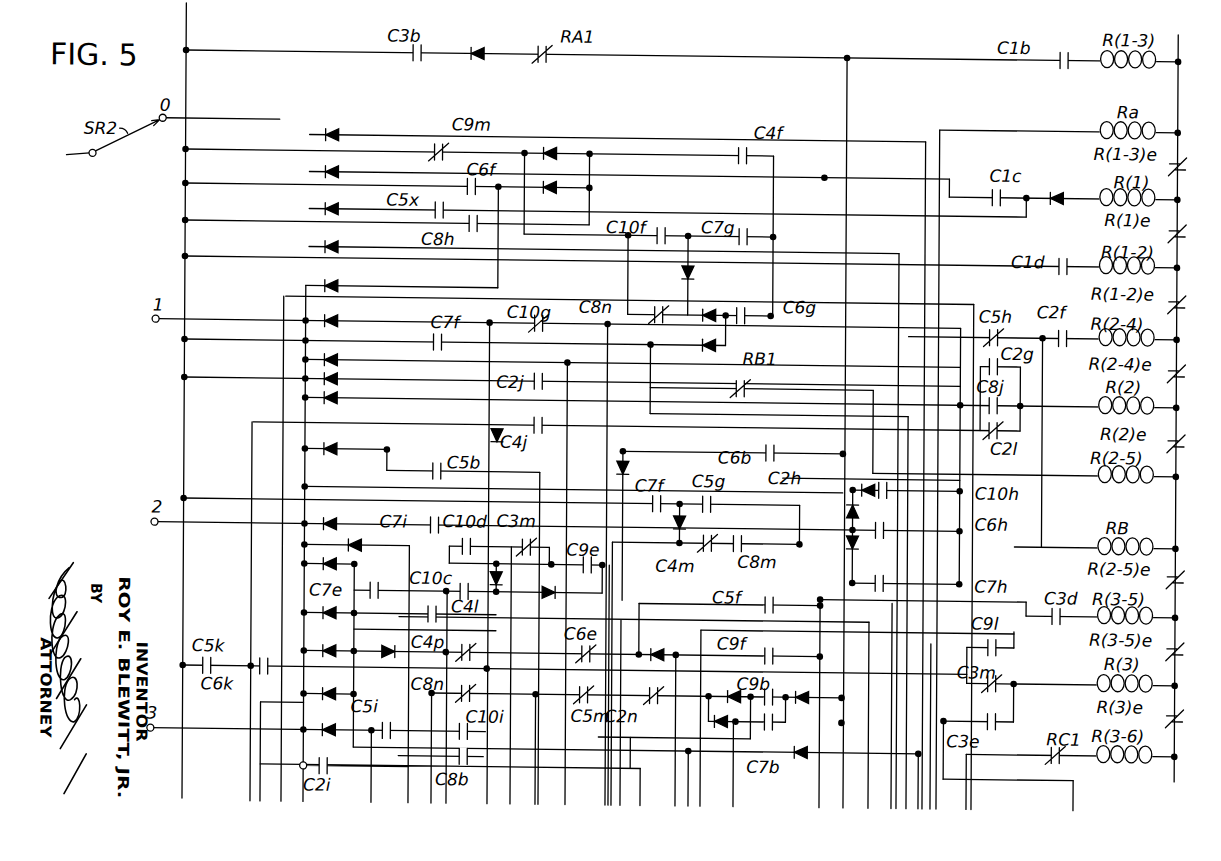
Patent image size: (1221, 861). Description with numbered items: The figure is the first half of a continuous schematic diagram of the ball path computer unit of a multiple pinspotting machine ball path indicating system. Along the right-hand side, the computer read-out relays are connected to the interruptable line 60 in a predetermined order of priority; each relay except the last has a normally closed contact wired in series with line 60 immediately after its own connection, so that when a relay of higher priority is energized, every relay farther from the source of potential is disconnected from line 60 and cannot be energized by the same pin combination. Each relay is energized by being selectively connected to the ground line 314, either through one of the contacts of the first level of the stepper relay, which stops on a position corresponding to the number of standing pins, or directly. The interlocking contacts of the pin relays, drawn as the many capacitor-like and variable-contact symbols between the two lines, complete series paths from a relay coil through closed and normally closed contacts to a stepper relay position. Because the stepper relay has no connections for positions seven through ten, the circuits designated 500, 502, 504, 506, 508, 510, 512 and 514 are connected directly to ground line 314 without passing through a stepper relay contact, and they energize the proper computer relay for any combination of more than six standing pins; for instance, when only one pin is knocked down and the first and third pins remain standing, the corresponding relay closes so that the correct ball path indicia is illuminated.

The circuit for combinations greater than six pins 500 is at (244, 60).
The circuit for combinations greater than six pins 502 is at (244, 157).
The circuit for combinations greater than six pins 504 is at (244, 193).
The circuit for combinations greater than six pins 506 is at (251, 227).
The circuit for combinations greater than six pins 508 is at (247, 265).
The circuit for combinations greater than six pins 510 is at (216, 347).
The circuit for combinations greater than six pins 512 is at (208, 382).
The circuit for combinations greater than six pins 514 is at (195, 506).
The ground line 314 is at (184, 207).
The interruptable line 60 is at (1178, 88).